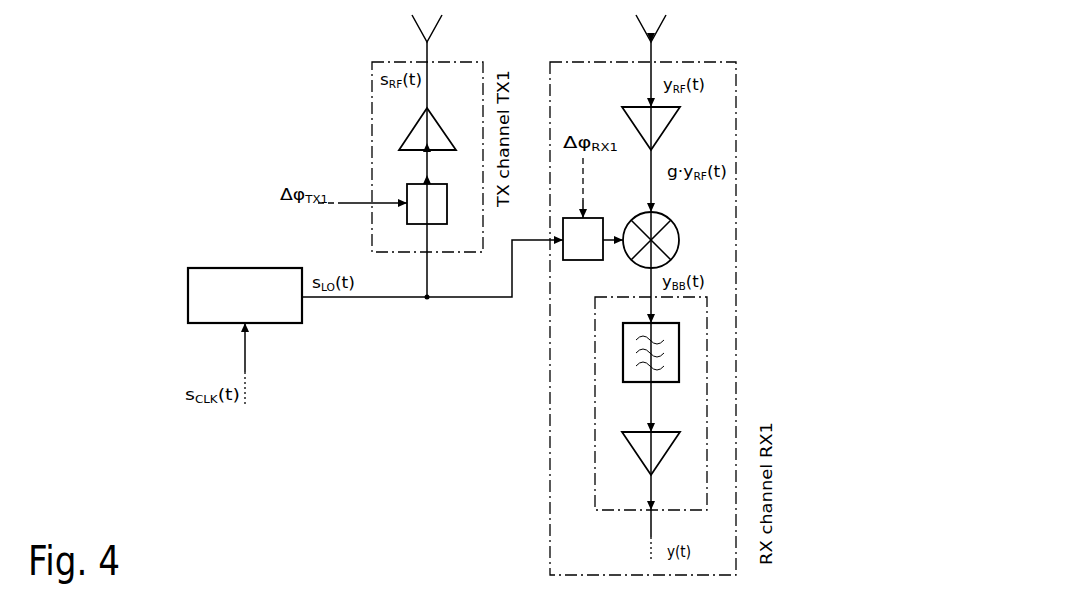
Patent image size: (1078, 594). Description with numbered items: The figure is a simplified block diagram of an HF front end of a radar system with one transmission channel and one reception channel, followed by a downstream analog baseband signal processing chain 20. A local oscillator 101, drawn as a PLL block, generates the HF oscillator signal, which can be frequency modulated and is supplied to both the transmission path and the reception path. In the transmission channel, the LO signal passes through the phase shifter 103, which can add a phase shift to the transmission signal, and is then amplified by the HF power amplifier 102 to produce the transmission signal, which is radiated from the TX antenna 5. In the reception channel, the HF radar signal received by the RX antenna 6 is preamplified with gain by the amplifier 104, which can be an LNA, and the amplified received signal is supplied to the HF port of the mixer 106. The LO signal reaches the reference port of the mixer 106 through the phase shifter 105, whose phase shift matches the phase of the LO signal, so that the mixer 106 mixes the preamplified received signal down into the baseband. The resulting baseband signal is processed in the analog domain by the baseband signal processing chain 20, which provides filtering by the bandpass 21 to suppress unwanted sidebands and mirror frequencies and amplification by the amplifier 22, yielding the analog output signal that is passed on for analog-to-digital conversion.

The TX antenna 5 is at (410, 33).
The HF power amplifier 102 is at (405, 133).
The phase shifter 103 is at (405, 184).
The local oscillator 101 is at (238, 267).
The phase shifter 105 is at (563, 261).
The RX antenna 6 is at (667, 28).
The amplifier 104 is at (676, 120).
The mixer 106 is at (680, 233).
The baseband signal processing chain 20 is at (600, 496).
The bandpass 21 is at (623, 355).
The amplifier 22 is at (634, 453).